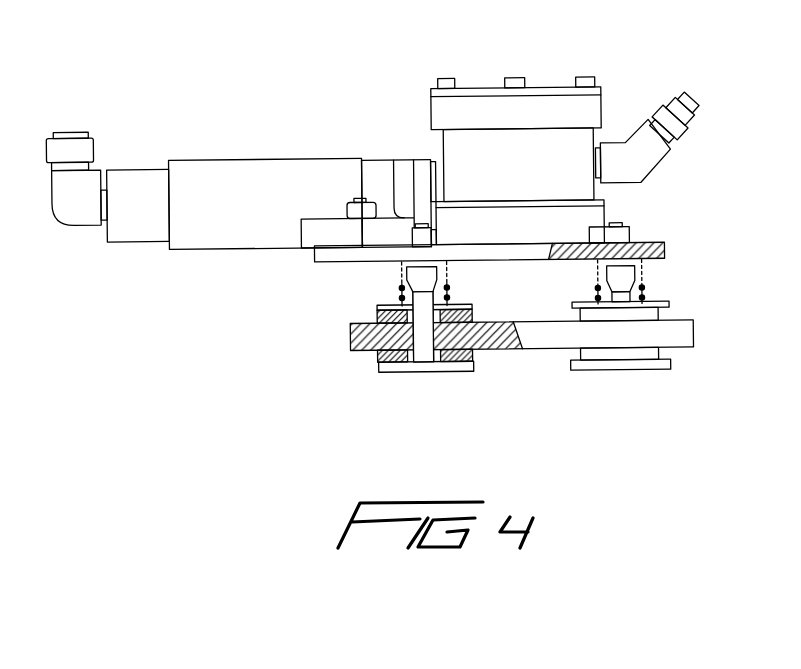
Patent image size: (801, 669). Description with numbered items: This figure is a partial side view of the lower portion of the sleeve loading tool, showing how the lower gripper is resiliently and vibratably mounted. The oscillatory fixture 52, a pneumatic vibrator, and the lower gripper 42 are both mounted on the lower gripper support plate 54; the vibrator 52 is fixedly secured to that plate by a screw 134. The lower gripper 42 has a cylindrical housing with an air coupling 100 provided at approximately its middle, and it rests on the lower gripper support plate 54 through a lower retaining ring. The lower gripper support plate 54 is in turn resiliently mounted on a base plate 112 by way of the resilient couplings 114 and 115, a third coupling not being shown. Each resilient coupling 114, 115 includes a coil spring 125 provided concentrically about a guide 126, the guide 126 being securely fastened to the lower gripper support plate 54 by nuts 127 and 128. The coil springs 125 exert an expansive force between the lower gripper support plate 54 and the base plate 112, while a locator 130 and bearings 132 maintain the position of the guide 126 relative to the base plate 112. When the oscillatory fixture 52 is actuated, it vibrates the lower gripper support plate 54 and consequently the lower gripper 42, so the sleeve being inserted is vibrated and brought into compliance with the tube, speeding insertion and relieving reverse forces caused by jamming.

The lower gripper 42 is at (431, 97).
The oscillatory fixture 52 is at (210, 157).
The lower gripper support plate 54 is at (318, 247).
The air coupling 100 is at (655, 175).
The base plate 112 is at (695, 340).
The resilient coupling 114 is at (652, 281).
The resilient coupling 115 is at (453, 279).
The coil spring 125 is at (400, 281).
The guide 126 is at (425, 358).
The nut 127 is at (630, 237).
The nut 128 is at (400, 228).
The locator 130 is at (378, 308).
The bearings 132 is at (378, 362).
The screw 134 is at (352, 201).